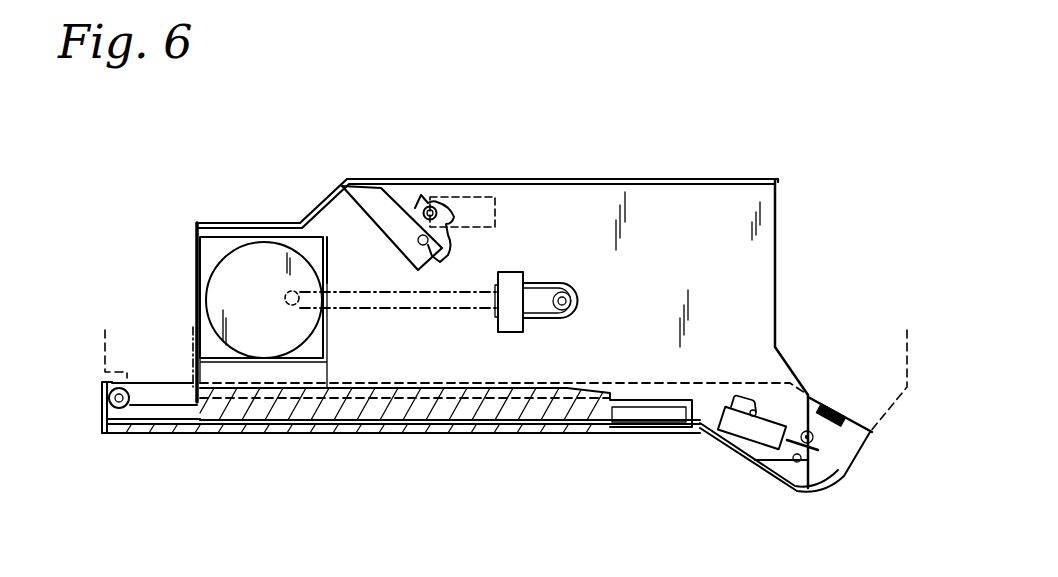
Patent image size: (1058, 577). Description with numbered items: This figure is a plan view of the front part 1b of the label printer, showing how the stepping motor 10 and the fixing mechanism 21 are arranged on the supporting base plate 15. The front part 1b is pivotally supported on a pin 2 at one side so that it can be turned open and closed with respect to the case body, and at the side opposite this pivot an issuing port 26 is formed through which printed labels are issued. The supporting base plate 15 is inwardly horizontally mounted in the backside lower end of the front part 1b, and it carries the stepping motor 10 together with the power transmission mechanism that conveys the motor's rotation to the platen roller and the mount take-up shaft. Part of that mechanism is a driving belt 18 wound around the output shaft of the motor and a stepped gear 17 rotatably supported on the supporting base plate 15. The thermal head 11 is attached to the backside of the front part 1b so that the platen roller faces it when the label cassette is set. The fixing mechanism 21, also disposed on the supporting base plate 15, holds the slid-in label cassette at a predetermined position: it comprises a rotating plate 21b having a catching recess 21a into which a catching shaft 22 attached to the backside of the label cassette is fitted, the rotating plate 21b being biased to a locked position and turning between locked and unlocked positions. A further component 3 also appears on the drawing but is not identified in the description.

The front part 1b is at (627, 440).
The pin 2 is at (122, 415).
The detection mark 3 is at (833, 406).
The stepping motor 10 is at (212, 248).
The thermal head 11 is at (747, 427).
The supporting base plate 15 is at (707, 215).
The stepped gear 17 is at (572, 310).
The driving belt 18 is at (353, 308).
The fixing mechanism 21 is at (405, 198).
The catching recess 21a is at (460, 218).
The rotating plate 21b is at (455, 246).
The catching shaft 22 is at (436, 196).
The issuing port 26 is at (845, 443).